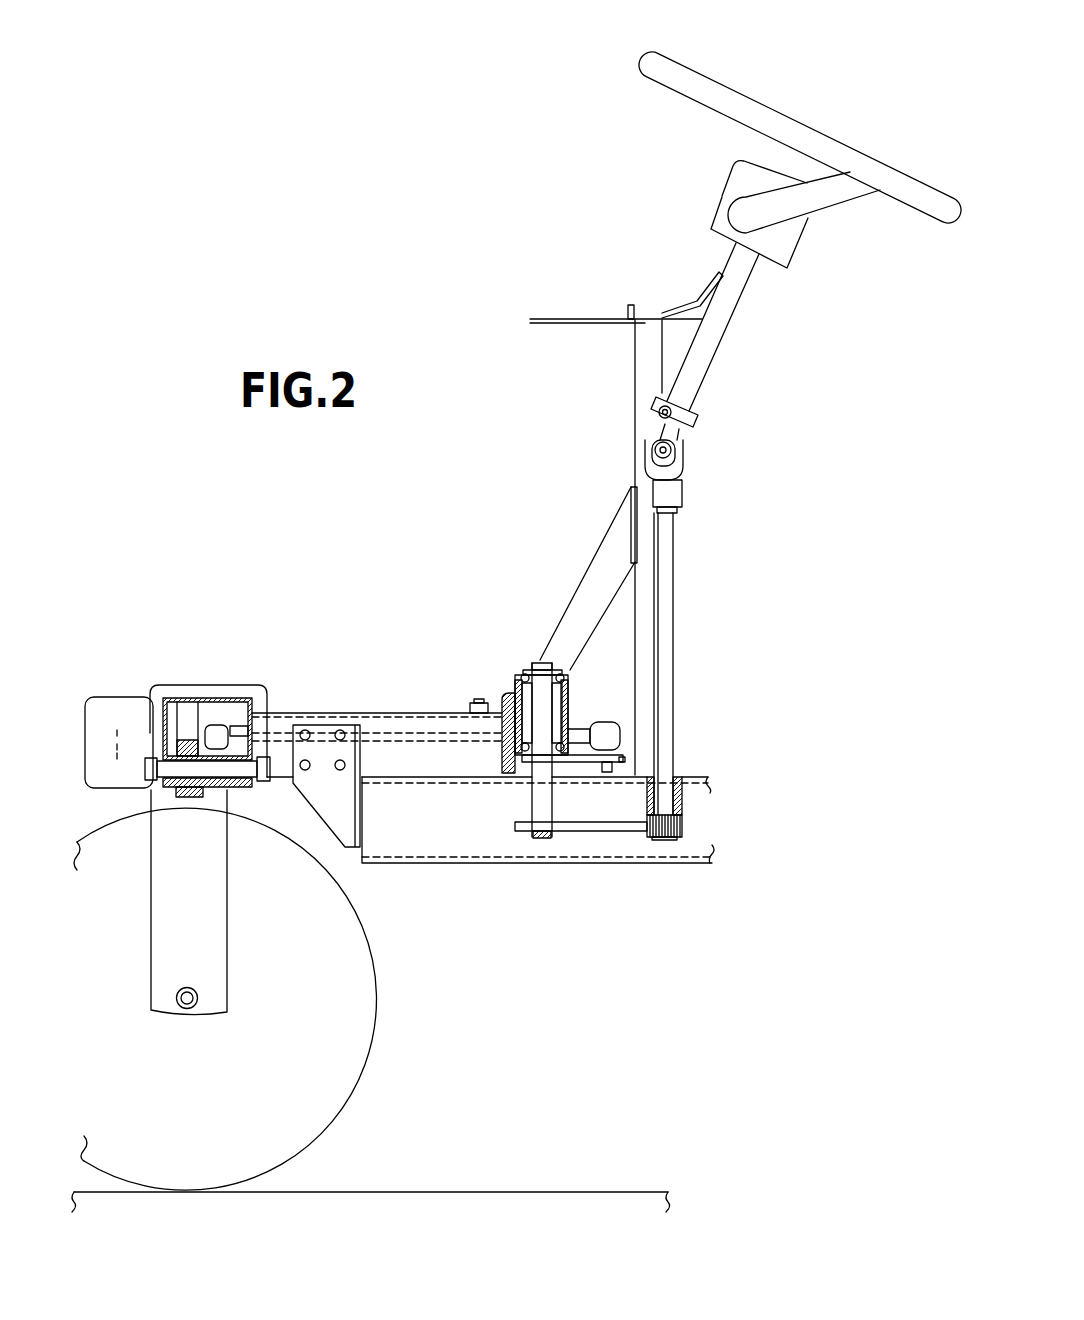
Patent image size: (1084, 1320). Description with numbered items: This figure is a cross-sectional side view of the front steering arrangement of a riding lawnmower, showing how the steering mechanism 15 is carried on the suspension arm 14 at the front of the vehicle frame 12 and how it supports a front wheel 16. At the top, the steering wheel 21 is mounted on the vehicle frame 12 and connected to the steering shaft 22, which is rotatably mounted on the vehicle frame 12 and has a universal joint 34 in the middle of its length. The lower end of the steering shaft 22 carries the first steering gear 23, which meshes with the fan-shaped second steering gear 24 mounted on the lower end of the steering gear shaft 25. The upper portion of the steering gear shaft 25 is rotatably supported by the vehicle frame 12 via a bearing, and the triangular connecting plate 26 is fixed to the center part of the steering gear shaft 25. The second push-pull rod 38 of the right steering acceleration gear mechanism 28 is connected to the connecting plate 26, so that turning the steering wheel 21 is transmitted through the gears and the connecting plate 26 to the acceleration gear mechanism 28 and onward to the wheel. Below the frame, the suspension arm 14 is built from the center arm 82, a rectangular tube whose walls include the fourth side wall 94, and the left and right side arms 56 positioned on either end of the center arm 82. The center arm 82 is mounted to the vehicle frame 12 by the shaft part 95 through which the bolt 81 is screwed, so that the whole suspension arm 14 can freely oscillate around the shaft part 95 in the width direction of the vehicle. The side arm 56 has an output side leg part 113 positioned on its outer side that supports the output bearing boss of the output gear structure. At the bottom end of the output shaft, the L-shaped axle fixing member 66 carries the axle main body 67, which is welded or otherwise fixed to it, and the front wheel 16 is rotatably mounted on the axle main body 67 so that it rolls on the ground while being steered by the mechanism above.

The vehicle frame 12 is at (411, 713).
The suspension arm 14 is at (183, 700).
The steering mechanism 15 is at (565, 487).
The front wheel 16 is at (311, 1125).
The steering wheel 21 is at (638, 58).
The steering shaft 22 is at (712, 372).
The first steering gear 23 is at (683, 827).
The second steering gear 24 is at (618, 832).
The steering gear shaft 25 is at (533, 797).
The connecting plate 26 is at (633, 758).
The right steering acceleration gear mechanism 28 is at (237, 713).
The universal joint 34 is at (685, 467).
The second push-pull rod 38 is at (433, 732).
The side arm 56 is at (80, 712).
The axle fixing member 66 is at (227, 982).
The axle main body 67 is at (200, 1007).
The bolt 81 is at (271, 757).
The center arm 82 is at (197, 720).
The fourth side wall 94 is at (184, 800).
The shaft part 95 is at (227, 790).
The output side leg part 113 is at (132, 720).